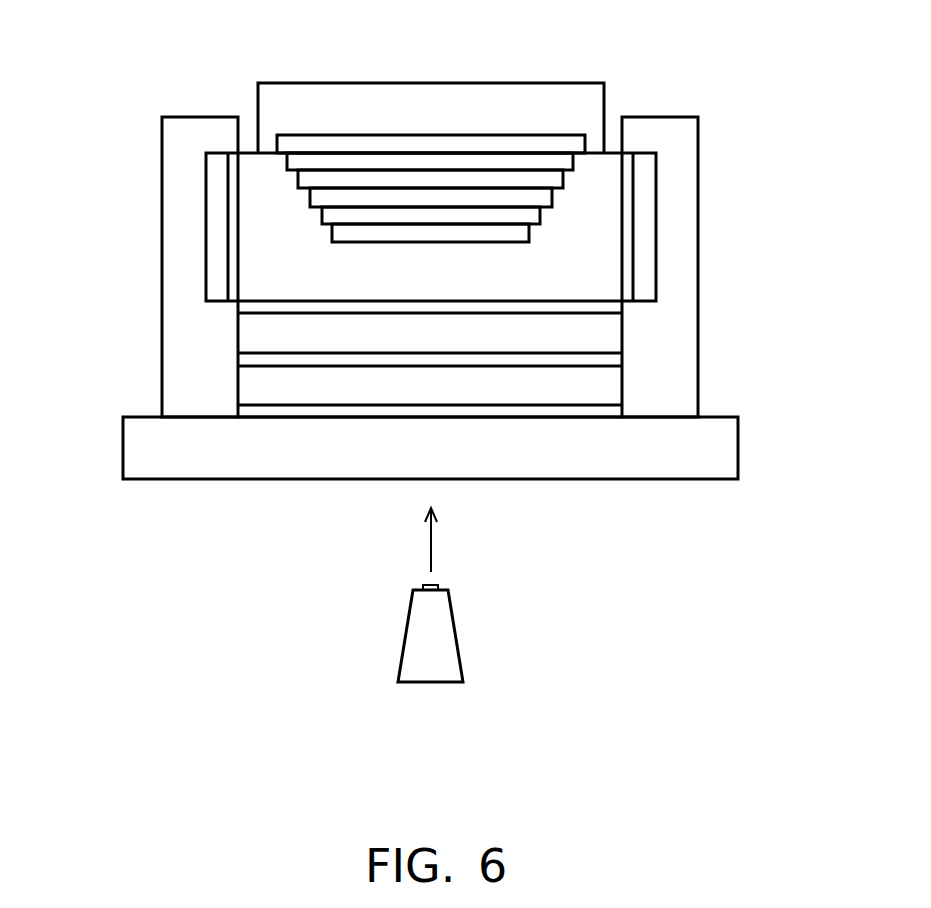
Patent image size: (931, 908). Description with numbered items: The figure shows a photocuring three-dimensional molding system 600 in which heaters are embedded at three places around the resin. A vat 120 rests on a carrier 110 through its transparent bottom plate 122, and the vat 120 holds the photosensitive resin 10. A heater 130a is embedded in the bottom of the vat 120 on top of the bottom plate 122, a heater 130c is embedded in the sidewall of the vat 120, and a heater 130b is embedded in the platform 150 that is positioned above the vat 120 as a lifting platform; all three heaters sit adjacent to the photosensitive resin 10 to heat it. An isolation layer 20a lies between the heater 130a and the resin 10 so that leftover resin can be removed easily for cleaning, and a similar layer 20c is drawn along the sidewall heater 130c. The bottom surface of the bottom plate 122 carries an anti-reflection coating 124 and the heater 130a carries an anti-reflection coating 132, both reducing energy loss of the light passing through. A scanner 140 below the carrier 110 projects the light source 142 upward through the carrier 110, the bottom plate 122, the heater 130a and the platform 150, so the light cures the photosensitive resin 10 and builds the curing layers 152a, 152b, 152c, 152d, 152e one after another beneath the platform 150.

The photocuring three-dimensional molding system 600 is at (110, 75).
The carrier 110 is at (727, 450).
The vat 120 is at (160, 277).
The bottom plate 122 is at (610, 385).
The anti-reflection coating 124 is at (255, 410).
The anti-reflection coating 132 is at (255, 360).
The heater 130a is at (610, 333).
The heater 130b is at (528, 142).
The heater 130c is at (215, 202).
The isolation layer 20a is at (255, 305).
The side surface of die 20c is at (232, 239).
The photosensitive resin 10 is at (610, 271).
The platform 150 is at (596, 128).
The curing layer 152a is at (563, 160).
The curing layer 152b is at (553, 178).
The curing layer 152c is at (543, 197).
The curing layer 152d is at (533, 214).
The curing layer 152e is at (518, 232).
The scanner 140 is at (445, 635).
The light source 142 is at (431, 543).